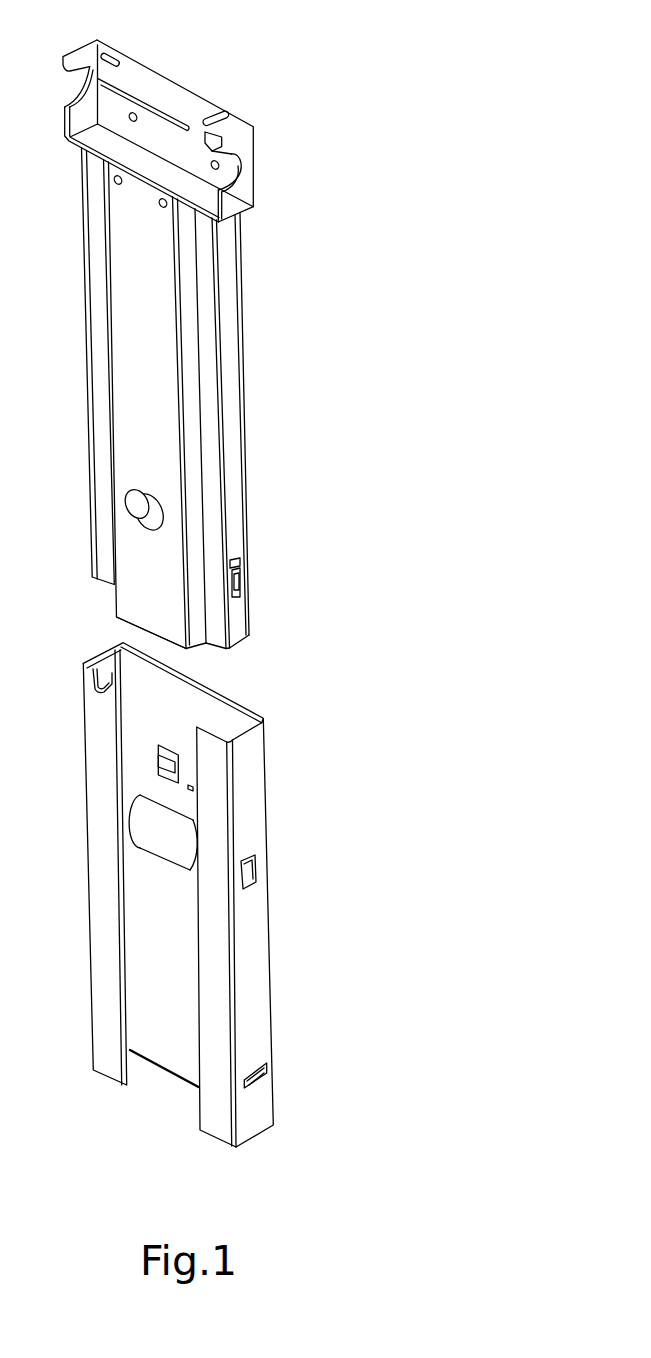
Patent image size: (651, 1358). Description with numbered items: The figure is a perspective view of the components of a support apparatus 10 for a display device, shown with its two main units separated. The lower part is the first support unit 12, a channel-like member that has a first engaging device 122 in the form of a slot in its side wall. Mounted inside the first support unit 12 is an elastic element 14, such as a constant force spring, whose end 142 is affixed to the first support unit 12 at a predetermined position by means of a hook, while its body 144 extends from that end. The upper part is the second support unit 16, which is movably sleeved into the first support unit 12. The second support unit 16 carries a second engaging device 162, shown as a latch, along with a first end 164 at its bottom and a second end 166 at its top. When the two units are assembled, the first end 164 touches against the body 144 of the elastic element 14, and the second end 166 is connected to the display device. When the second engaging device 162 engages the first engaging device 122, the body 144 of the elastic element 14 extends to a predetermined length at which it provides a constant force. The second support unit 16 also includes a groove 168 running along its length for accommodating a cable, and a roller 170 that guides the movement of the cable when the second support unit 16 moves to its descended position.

The support apparatus 10 is at (282, 50).
The first support unit 12 is at (253, 967).
The elastic element 14 is at (147, 820).
The second support unit 16 is at (232, 348).
The first engaging device 122 is at (247, 870).
The end of elastic element 142 is at (182, 760).
The body of elastic element 144 is at (178, 840).
The second engaging device 162 is at (246, 570).
The first end 164 is at (172, 632).
The second end 166 is at (158, 147).
The groove 168 is at (103, 455).
The roller 170 is at (127, 500).